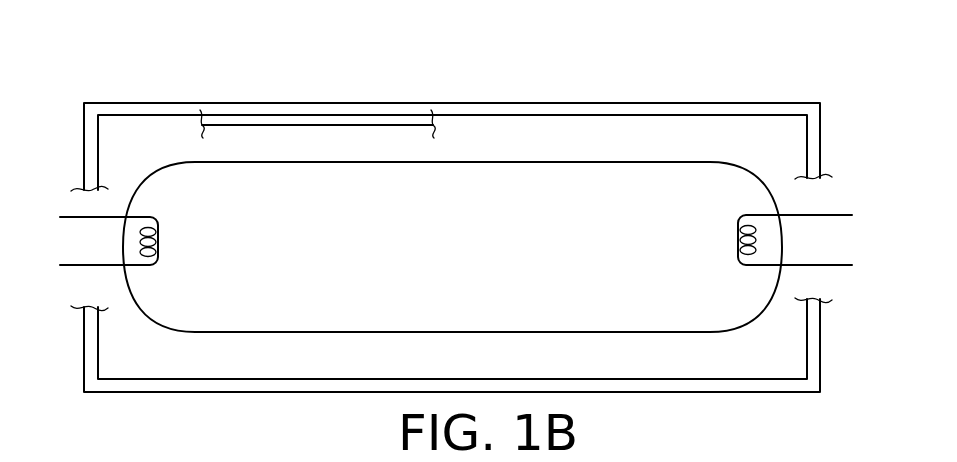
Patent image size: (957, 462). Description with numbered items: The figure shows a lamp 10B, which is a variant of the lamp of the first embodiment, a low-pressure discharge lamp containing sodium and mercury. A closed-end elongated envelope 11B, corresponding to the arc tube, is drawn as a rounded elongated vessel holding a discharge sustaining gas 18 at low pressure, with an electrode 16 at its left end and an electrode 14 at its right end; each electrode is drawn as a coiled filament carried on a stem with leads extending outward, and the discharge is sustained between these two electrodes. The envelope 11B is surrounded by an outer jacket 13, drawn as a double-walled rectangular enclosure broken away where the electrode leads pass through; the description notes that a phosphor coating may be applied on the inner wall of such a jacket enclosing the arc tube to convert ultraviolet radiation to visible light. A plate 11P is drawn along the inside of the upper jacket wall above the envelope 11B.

The lamp 10B is at (452, 203).
The outer envelope / housing wall 13 is at (608, 102).
The plate 11P is at (387, 124).
The bulb envelope 11B is at (556, 162).
The fill gas / interior 18 is at (551, 262).
The electrode 16 is at (158, 248).
The electrode 14 is at (738, 245).